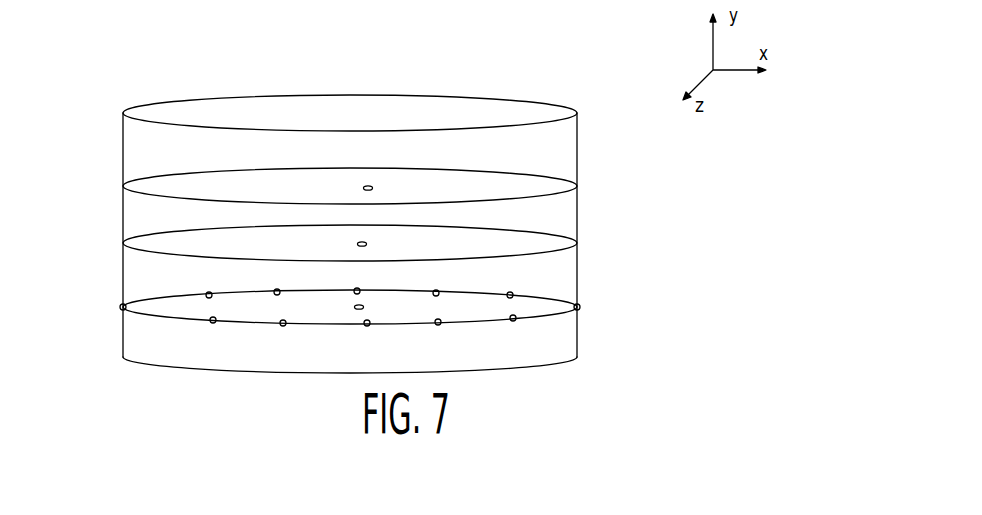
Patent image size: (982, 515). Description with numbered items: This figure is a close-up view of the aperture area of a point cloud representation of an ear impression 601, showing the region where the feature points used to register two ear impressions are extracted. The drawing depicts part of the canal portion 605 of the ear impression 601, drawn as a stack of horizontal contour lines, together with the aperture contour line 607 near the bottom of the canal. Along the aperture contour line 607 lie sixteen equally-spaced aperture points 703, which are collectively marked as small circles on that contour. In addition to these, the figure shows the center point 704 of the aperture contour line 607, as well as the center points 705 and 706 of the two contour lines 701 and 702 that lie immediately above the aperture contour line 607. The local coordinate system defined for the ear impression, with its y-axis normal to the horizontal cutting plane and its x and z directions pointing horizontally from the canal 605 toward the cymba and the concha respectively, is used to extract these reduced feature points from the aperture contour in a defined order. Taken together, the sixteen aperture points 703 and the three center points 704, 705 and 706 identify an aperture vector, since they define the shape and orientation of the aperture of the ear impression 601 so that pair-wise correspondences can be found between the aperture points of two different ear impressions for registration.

The ear impression 601 is at (672, 215).
The canal 605 is at (578, 132).
The aperture contour line 607 is at (580, 308).
The contour line 701 is at (122, 186).
The contour line 702 is at (122, 243).
The aperture points 703 is at (438, 322).
The center point of aperture contour line 704 is at (365, 305).
The center point of contour line 705 is at (366, 242).
The center point of contour line 706 is at (372, 186).